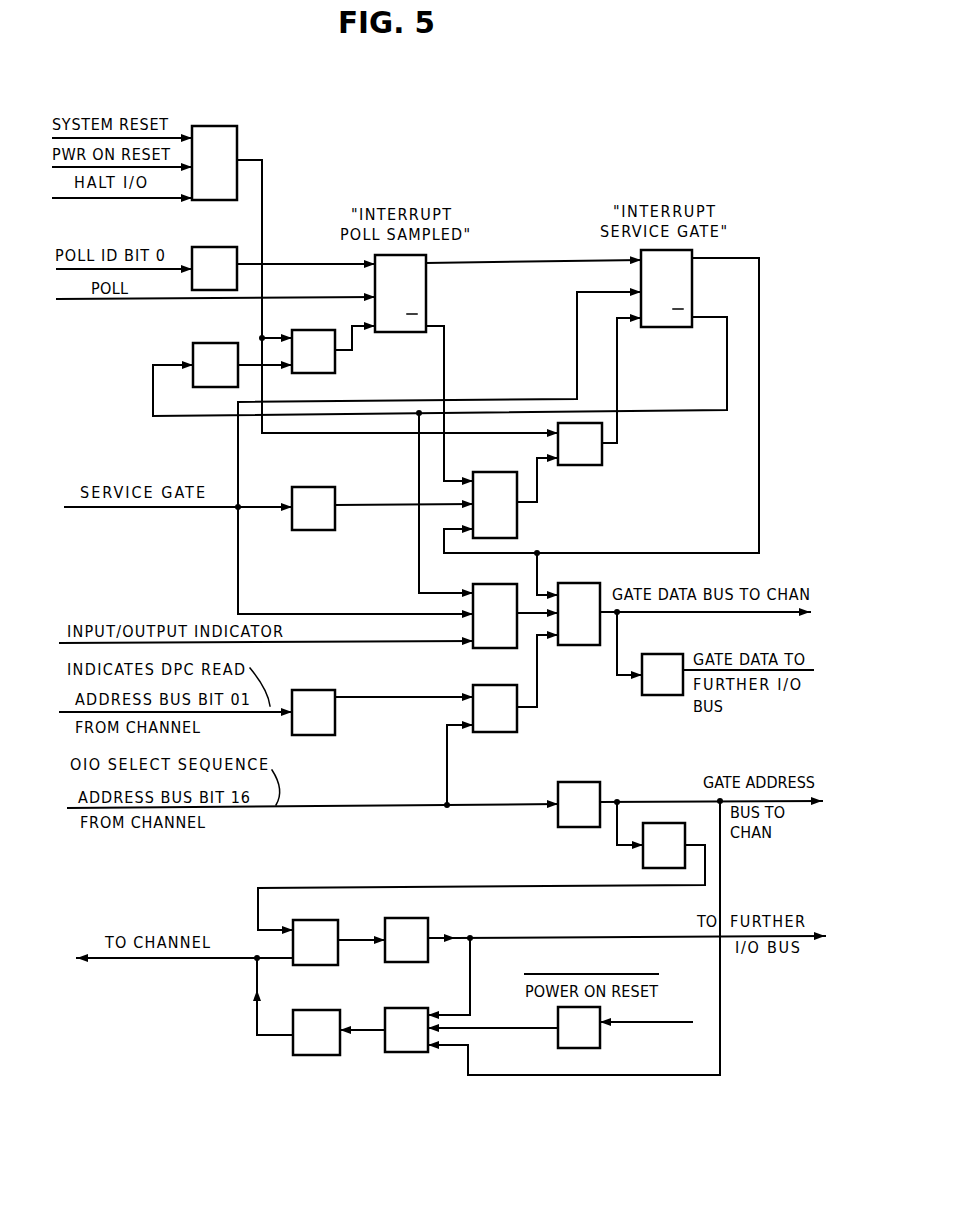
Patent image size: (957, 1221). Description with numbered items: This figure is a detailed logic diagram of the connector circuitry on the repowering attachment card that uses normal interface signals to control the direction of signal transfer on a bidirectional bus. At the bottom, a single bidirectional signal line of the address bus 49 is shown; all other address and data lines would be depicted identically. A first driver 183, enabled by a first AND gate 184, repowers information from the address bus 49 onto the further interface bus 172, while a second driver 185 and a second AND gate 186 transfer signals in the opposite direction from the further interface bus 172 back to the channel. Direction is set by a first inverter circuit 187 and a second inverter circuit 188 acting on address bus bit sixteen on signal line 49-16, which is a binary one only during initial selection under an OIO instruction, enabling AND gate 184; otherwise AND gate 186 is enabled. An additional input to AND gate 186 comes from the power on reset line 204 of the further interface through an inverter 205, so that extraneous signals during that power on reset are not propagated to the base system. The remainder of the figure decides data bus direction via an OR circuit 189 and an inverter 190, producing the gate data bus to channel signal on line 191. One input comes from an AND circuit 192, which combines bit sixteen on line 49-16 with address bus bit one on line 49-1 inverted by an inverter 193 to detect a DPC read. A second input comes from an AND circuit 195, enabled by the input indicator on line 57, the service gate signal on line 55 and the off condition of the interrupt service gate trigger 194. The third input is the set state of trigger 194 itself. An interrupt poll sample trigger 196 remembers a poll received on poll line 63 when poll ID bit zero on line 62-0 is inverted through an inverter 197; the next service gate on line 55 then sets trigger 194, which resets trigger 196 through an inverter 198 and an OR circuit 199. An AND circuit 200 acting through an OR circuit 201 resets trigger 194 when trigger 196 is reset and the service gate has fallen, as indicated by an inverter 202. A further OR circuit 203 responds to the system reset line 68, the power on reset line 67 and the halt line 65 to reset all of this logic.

The OR circuit 203 is at (233, 135).
The system reset line 68 is at (168, 135).
The power on reset line 67 is at (164, 168).
The halt or machine check signal line 65 is at (143, 199).
The poll ID bit 0 line 62-0 is at (170, 263).
The inverter 197 is at (232, 253).
The poll line 63 is at (145, 300).
The interrupt poll sample trigger 196 is at (428, 297).
The interrupt service gate trigger 194 is at (671, 329).
The inverter 198 is at (216, 343).
The OR circuit 199 is at (299, 333).
The inverter 202 is at (335, 488).
The service gate line 55 is at (155, 510).
The AND circuit 200 is at (517, 513).
The OR circuit 201 is at (598, 467).
The AND circuit 195 is at (478, 587).
The input/output indicator line 57 is at (395, 644).
The OR circuit 189 is at (571, 641).
The gate data bus to channel line 191 is at (720, 613).
The inverter 190 is at (665, 692).
The inverter 193 is at (323, 689).
The address bus bit 1 signal line 49-1 is at (250, 714).
The AND circuit 192 is at (508, 687).
The address bus bit 16 signal line 49-16 is at (330, 806).
The first inverter circuit 187 is at (580, 781).
The second inverter circuit 188 is at (632, 855).
The address bus 49 is at (207, 962).
The first AND gate 184 is at (310, 920).
The first driver 183 is at (420, 918).
The further interface bus 172 is at (808, 932).
The second driver 185 is at (305, 1010).
The second AND gate 186 is at (408, 1008).
The inverter 205 is at (580, 1050).
The power on reset line 204 is at (625, 1028).